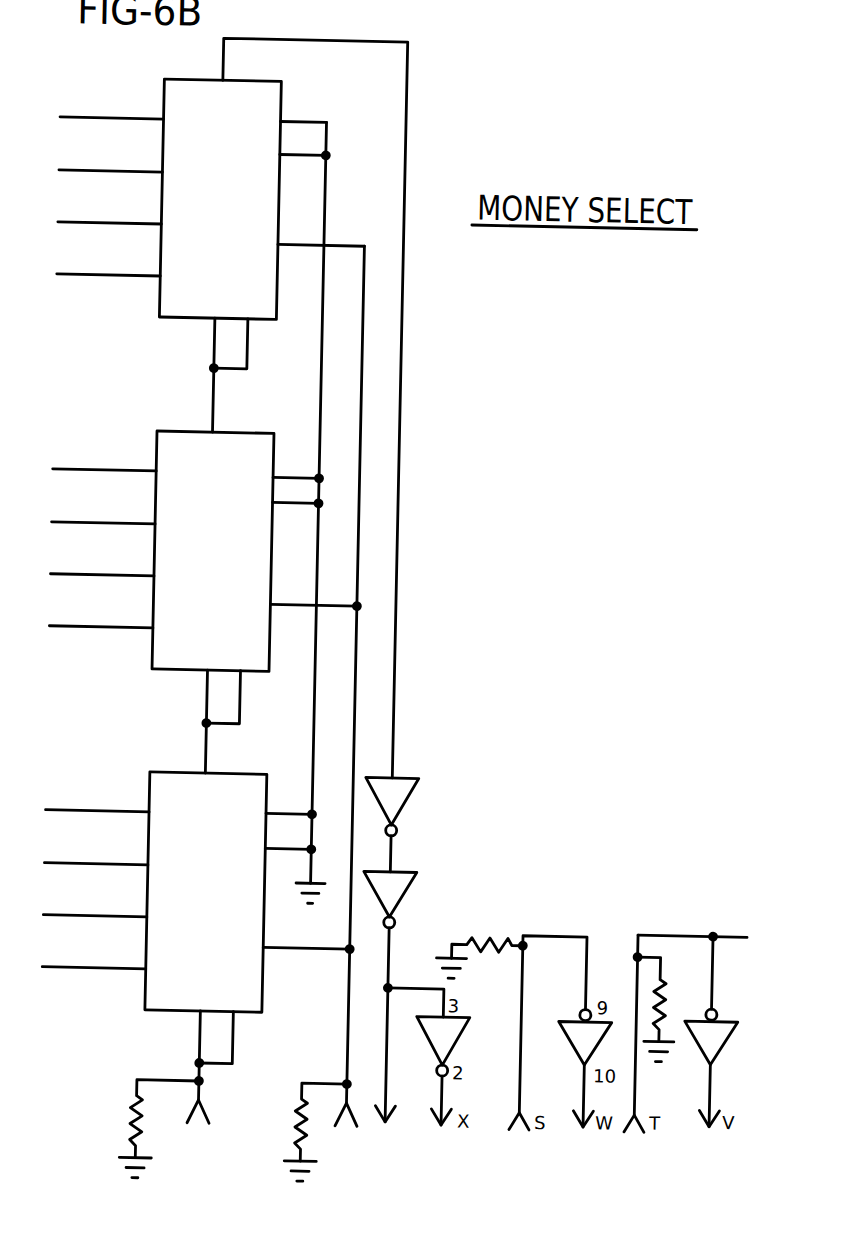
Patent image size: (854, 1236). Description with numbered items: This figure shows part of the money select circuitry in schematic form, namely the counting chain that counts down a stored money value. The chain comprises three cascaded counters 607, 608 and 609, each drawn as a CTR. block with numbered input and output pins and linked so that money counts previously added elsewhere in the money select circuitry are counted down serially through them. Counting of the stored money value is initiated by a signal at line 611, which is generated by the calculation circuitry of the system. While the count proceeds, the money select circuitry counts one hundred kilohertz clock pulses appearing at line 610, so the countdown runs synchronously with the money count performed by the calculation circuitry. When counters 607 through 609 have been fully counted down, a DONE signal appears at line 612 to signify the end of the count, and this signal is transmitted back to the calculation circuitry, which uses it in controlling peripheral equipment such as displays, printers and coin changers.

The counter 607 is at (232, 199).
The counter 608 is at (231, 551).
The counter 609 is at (232, 875).
The line 610 is at (212, 1090).
The line 611 is at (360, 1091).
The line 612 is at (401, 1088).